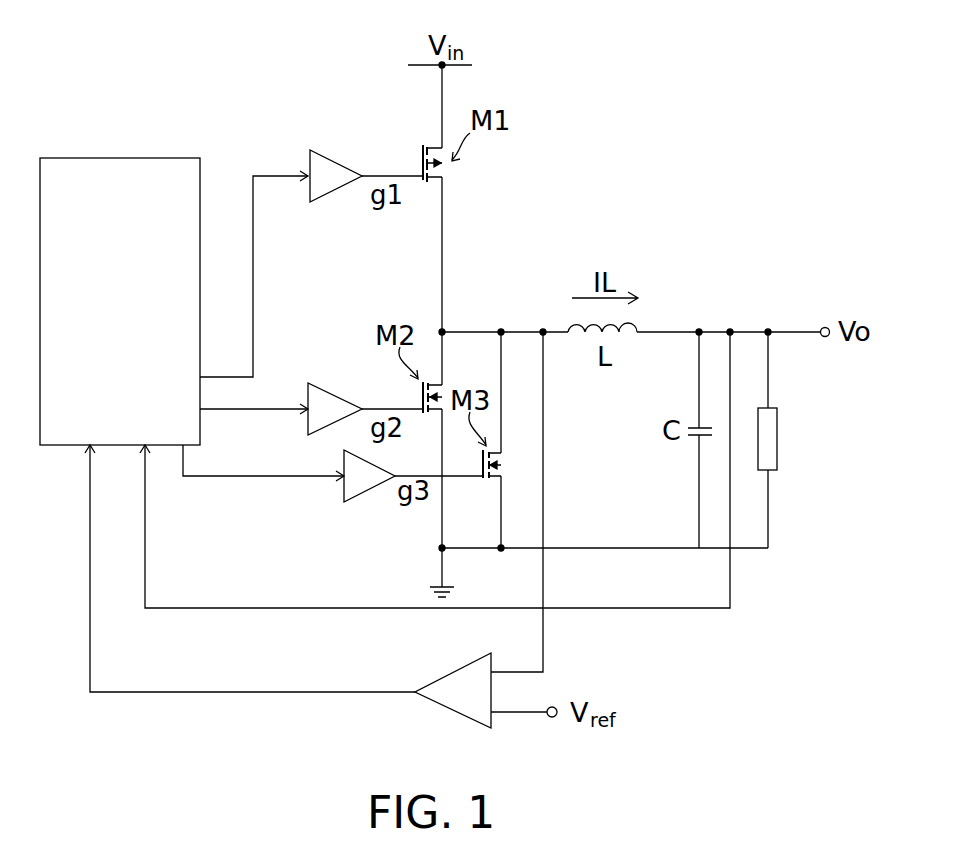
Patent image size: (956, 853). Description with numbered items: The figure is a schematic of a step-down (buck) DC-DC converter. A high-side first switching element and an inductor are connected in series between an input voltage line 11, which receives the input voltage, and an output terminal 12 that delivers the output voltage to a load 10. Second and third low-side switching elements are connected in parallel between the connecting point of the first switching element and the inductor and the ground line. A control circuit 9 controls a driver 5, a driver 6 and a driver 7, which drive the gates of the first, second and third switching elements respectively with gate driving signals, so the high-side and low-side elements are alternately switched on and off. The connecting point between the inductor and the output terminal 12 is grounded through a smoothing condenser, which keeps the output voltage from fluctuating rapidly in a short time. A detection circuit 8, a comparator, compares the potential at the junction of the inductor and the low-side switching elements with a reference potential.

The driver 5 is at (333, 168).
The driver 6 is at (326, 398).
The driver 7 is at (357, 485).
The detection circuit 8 is at (461, 703).
The control circuit 9 is at (78, 168).
The load 10 is at (770, 437).
The input voltage line 11 is at (424, 62).
The output terminal 12 is at (829, 327).